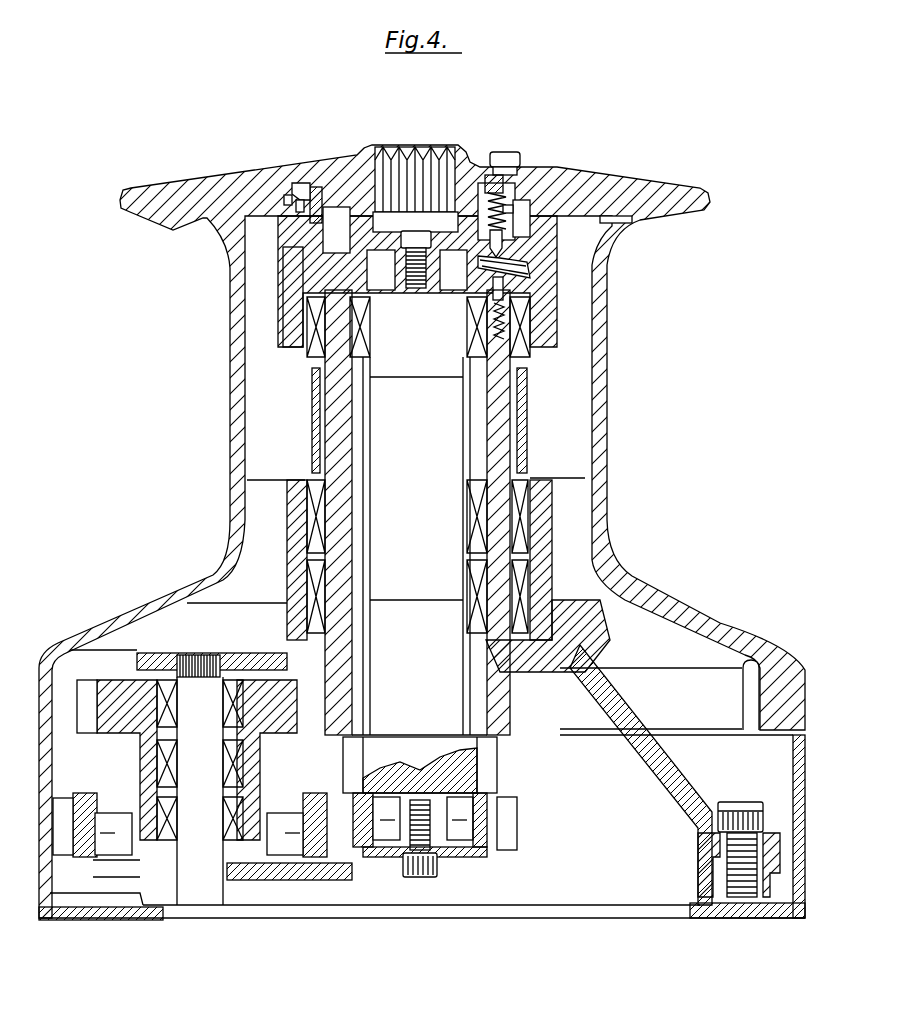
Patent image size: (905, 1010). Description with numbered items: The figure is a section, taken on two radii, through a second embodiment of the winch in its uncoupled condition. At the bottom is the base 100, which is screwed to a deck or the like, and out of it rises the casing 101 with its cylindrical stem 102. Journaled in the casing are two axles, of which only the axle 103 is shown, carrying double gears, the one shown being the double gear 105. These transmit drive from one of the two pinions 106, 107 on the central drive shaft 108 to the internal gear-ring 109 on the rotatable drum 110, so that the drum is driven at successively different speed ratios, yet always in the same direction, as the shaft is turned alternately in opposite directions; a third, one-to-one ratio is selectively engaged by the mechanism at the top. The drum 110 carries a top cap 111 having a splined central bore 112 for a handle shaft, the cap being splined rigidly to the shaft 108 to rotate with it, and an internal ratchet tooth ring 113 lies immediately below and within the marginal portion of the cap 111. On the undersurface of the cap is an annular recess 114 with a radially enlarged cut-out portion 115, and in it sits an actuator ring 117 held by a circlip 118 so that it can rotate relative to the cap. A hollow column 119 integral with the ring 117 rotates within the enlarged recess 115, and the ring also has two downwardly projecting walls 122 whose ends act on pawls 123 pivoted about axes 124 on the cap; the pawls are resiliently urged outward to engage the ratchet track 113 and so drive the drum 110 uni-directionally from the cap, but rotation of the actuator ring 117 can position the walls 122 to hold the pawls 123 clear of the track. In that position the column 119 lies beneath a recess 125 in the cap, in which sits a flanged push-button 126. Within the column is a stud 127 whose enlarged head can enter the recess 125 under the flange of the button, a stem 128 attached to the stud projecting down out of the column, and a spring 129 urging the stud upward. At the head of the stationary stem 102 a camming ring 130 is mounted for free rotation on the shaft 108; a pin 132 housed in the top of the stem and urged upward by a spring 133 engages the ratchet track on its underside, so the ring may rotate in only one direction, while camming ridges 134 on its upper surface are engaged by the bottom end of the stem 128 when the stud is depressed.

The base 100 is at (768, 893).
The casing 101 is at (596, 704).
The cylindrical stem 102 is at (335, 437).
The axle 103 is at (203, 679).
The double gear 105 is at (140, 706).
The pinion 106 is at (510, 814).
The pinion 107 is at (487, 758).
The central drive shaft 108 is at (390, 408).
The internal gear-ring 109 is at (753, 676).
The drum 110 is at (612, 431).
The top cap 111 is at (347, 166).
The splined central bore 112 is at (396, 162).
The internal ratchet tooth ring 113 is at (523, 217).
The annular recess 114 is at (308, 190).
The radially enlarged cut-out portion 115 is at (483, 226).
The actuator ring 117 is at (314, 186).
The circlip 118 is at (297, 194).
The hollow column 119 is at (508, 233).
The downwardly projecting walls 122 is at (292, 200).
The pawls 123 is at (327, 227).
The axes 124 is at (307, 267).
The recess 125 is at (497, 203).
The flanged push-button 126 is at (497, 152).
The stud 127 is at (494, 180).
The stem 128 is at (527, 258).
The spring 129 is at (505, 209).
The camming ring 130 is at (510, 280).
The pin 132 is at (490, 298).
The spring 133 is at (490, 335).
The camming ridges 134 is at (508, 266).